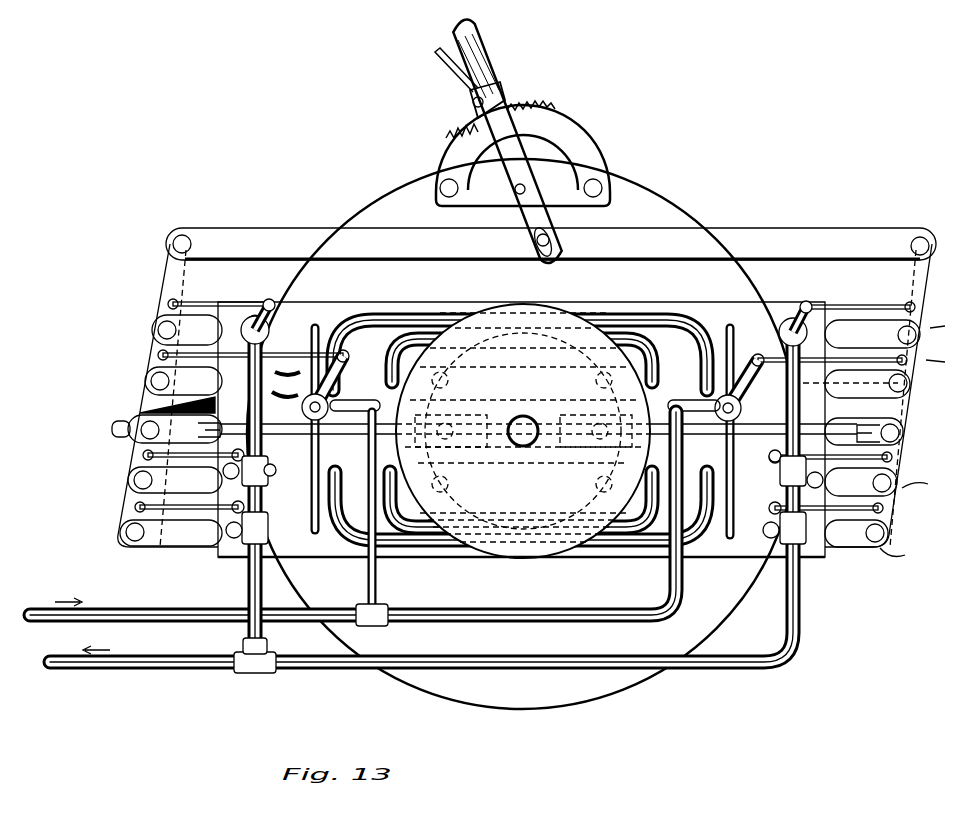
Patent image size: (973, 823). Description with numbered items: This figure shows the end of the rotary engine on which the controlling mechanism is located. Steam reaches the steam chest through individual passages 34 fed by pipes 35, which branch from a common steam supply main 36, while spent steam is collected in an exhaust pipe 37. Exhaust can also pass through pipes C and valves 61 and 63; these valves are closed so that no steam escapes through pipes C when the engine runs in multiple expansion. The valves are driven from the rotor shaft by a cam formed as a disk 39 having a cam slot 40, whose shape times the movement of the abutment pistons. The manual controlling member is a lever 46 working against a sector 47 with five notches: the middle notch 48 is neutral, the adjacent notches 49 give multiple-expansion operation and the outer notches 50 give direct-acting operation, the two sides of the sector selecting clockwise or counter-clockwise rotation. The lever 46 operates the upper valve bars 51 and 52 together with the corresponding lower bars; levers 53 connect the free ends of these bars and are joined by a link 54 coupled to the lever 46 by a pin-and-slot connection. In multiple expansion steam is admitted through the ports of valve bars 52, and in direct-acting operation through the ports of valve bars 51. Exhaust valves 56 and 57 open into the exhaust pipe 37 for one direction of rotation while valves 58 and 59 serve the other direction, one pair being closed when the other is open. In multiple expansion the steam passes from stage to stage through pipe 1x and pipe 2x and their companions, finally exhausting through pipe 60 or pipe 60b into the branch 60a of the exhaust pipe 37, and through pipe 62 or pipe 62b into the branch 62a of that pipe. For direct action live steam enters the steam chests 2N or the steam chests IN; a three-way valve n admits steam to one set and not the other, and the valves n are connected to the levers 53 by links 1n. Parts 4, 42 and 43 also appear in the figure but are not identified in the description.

The central shaft 4 is at (523, 431).
The disk 39 is at (552, 318).
The cam slot 40 is at (455, 452).
The pipe connection 42 is at (385, 440).
The forked rod 43 is at (270, 438).
The individual passages 34 is at (525, 393).
The pipes 35 is at (385, 590).
The common steam supply main 36 is at (118, 608).
The exhaust pipe 37 is at (185, 675).
The controlling lever 46 is at (478, 50).
The sector 47 is at (588, 148).
The middle notch 48 is at (510, 90).
The notches 49 is at (533, 100).
The notches 50 is at (560, 100).
The valve bars 51 is at (948, 321).
The valve bars 52 is at (946, 359).
The levers 53 is at (168, 278).
The link 54 is at (275, 240).
The valve 56 is at (232, 305).
The valve 57 is at (806, 550).
The valve 58 is at (802, 306).
The valve 59 is at (240, 545).
The pipe 60 is at (298, 376).
The branch 60a is at (250, 592).
The pipe 60b is at (224, 484).
The valve 61 is at (769, 455).
The pipe 62 is at (825, 484).
The branch 62a is at (803, 627).
The pipe 62b is at (845, 383).
The valve 63 is at (274, 480).
The pipe 1x is at (475, 345).
The pipe 2x is at (440, 565).
The links 1n is at (163, 352).
The pipes C is at (520, 385).
The three way valve n is at (518, 381).
The 1N steam chests IN is at (731, 550).
The 2N steam chests 2N is at (315, 550).